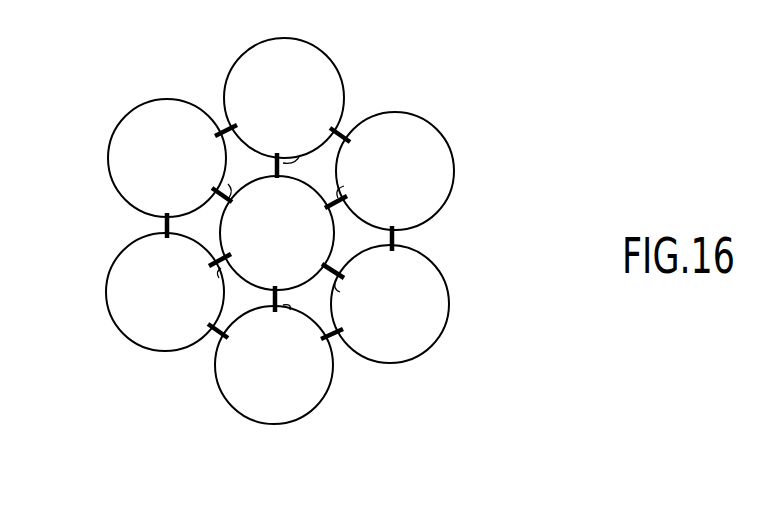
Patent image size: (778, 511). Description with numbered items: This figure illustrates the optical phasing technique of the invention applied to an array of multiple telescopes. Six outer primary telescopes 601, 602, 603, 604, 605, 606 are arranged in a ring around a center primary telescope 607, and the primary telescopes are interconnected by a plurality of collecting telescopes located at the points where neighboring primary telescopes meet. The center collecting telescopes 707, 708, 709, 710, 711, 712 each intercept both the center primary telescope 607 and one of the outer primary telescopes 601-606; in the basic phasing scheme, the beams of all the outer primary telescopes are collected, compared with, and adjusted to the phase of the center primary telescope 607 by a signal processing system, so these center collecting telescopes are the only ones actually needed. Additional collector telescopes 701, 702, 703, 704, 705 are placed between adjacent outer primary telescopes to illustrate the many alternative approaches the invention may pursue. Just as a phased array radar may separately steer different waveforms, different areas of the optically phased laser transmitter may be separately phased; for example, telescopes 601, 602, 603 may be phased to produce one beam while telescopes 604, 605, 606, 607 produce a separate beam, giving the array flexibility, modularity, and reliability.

The primary telescope 601 is at (282, 425).
The primary telescope 602 is at (450, 305).
The primary telescope 603 is at (455, 171).
The primary telescope 604 is at (317, 50).
The primary telescope 605 is at (112, 138).
The primary telescope 606 is at (107, 288).
The center primary telescope 607 is at (306, 236).
The collector telescope 701 is at (342, 338).
The collector telescope 702 is at (396, 232).
The collector telescope 703 is at (345, 128).
The collector telescope 704 is at (223, 125).
The collector telescope 705 is at (160, 227).
The center collecting telescope 707 is at (221, 268).
The center collecting telescope 708 is at (290, 310).
The center collecting telescope 709 is at (340, 292).
The center collecting telescope 710 is at (344, 186).
The center collecting telescope 711 is at (300, 155).
The center collecting telescope 712 is at (228, 184).